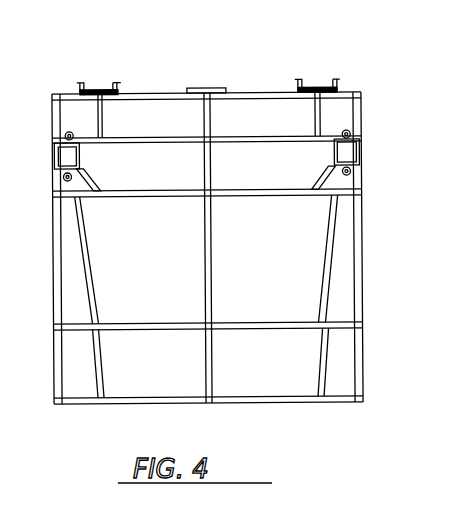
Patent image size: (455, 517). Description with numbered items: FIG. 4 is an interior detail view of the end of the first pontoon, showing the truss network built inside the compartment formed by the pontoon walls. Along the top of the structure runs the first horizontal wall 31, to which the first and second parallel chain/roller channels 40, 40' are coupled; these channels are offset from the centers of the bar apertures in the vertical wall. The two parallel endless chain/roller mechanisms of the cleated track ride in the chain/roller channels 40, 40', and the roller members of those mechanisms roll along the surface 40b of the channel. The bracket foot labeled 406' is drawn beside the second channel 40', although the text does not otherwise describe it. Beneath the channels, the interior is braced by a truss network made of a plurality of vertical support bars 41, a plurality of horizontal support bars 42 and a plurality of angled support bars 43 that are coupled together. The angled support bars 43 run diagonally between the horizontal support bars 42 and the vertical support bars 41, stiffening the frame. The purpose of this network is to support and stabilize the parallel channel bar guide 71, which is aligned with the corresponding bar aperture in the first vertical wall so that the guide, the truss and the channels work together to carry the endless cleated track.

The second parallel chain/roller channel 40' is at (105, 50).
The bracket base 406' is at (126, 67).
The first parallel chain/roller channel 40 is at (317, 66).
The surface of chain/roller channel 40b is at (328, 90).
The first parallel channel bar guide 71 is at (74, 161).
The vertical support bar 41 is at (263, 137).
The horizontal support bar 42 is at (103, 118).
The angled support bar 43 is at (86, 172).
The first horizontal wall 31 is at (50, 516).